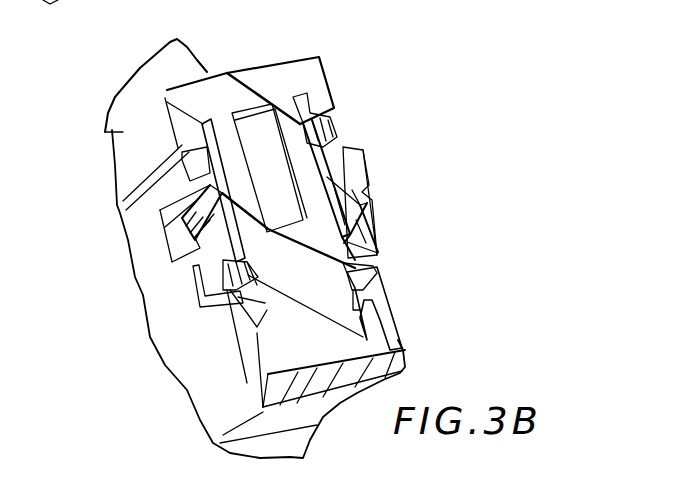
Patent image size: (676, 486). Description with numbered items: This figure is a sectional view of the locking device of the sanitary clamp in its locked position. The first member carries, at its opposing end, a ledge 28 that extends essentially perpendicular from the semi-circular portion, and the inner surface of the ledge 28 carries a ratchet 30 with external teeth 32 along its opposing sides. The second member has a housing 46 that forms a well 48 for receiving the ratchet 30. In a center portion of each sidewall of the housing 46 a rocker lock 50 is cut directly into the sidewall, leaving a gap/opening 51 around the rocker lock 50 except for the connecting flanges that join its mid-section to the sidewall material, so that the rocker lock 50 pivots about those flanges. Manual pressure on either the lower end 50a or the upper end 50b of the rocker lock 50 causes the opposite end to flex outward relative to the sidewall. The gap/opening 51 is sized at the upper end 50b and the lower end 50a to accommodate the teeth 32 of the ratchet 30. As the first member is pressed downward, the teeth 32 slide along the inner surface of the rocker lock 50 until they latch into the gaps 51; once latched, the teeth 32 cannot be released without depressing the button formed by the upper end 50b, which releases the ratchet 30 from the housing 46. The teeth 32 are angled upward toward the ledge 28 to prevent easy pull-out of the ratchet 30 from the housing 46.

The ledge 28 is at (118, 163).
The ratchet 30 is at (268, 61).
The teeth 32 is at (260, 328).
The housing 46 is at (257, 387).
The well 48 is at (365, 332).
The rocker lock 50 is at (165, 227).
The lower end 50a is at (362, 230).
The upper end 50b is at (372, 190).
The gap/opening 51 is at (337, 143).